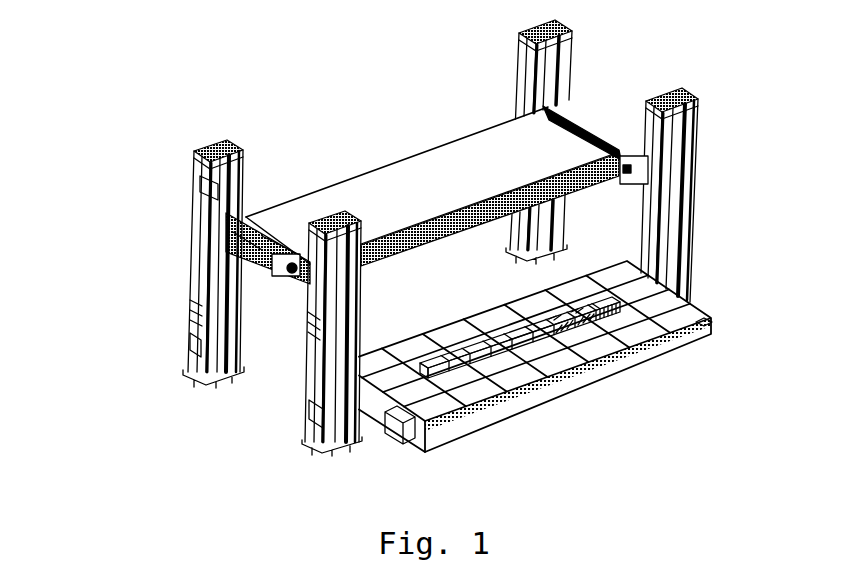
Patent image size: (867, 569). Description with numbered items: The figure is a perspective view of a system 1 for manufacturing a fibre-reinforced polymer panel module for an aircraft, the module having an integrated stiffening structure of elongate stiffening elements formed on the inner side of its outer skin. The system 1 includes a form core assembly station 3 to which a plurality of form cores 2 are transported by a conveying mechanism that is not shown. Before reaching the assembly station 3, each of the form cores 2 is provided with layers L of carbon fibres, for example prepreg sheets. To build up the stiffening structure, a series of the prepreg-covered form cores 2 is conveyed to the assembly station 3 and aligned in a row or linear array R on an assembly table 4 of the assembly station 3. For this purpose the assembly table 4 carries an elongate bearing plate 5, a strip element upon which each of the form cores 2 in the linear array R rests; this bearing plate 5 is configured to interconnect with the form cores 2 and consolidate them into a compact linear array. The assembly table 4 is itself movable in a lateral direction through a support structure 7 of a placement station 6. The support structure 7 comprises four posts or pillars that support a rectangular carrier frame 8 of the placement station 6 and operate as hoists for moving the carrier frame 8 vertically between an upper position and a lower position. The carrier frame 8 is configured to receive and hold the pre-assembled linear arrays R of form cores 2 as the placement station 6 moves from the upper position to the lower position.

The system 1 is at (172, 90).
The form cores 2 is at (481, 357).
The form core assembly station 3 is at (722, 280).
The assembly table 4 is at (384, 414).
The elongate bearing plate 5 is at (621, 309).
The placement station 6 is at (440, 110).
The support structure 7 is at (189, 262).
The carrier frame 8 is at (397, 186).
The layers of carbon fibres L is at (568, 322).
The linear array R is at (515, 326).